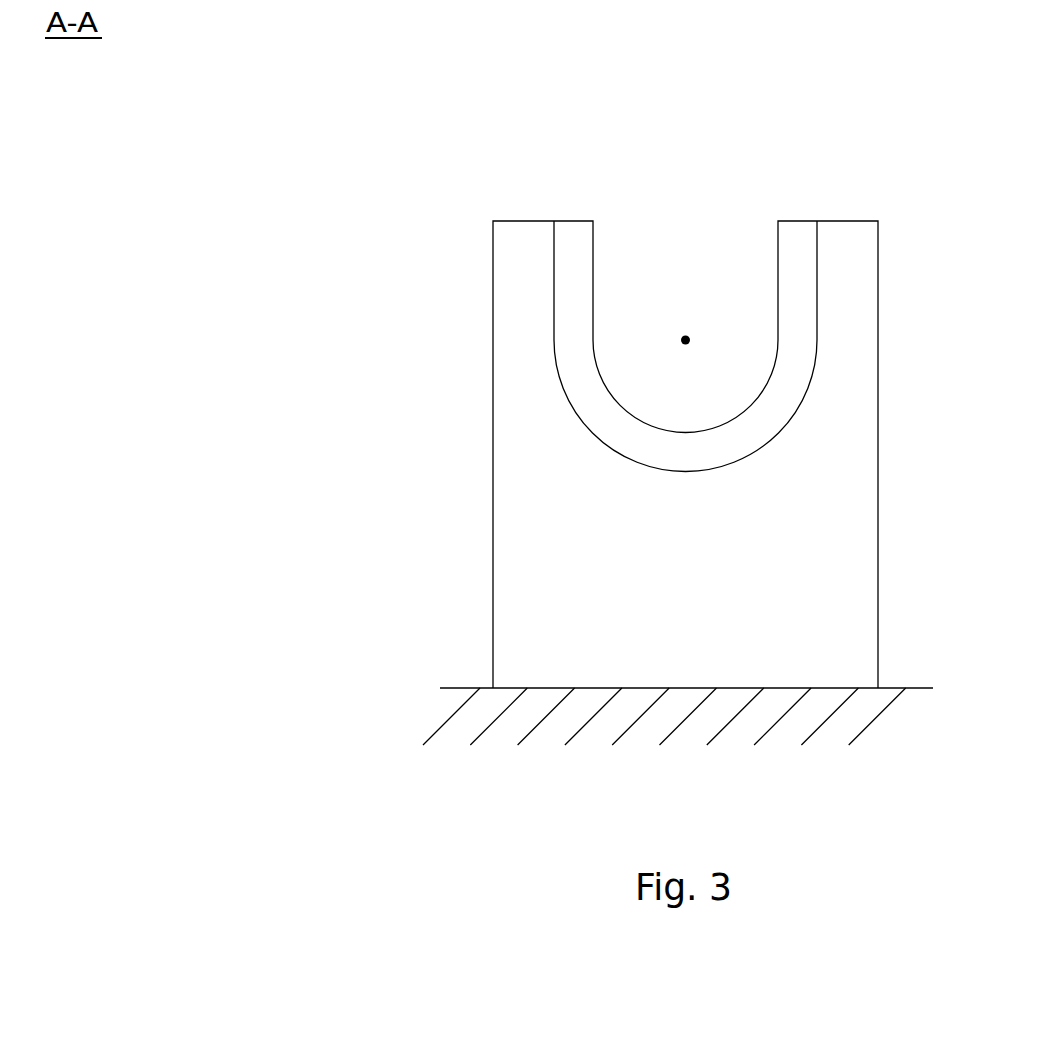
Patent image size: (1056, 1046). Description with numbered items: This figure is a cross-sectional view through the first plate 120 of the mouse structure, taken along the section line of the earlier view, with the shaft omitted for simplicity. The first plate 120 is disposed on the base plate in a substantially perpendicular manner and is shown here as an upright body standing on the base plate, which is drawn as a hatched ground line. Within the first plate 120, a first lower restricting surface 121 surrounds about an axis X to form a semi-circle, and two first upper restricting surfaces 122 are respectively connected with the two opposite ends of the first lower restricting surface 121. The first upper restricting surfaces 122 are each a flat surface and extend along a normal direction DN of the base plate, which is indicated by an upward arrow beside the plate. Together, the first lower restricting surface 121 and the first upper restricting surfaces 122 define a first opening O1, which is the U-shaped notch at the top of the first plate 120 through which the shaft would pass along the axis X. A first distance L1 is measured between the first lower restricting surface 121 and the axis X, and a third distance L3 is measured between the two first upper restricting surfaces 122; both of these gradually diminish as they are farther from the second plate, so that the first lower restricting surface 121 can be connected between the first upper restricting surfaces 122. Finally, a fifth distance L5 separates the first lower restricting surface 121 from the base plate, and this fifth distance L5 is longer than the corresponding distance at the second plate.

The first plate 120 is at (725, 454).
The first lower restricting surface 121 is at (625, 442).
The first upper restricting surfaces 122 is at (565, 302).
The axis X is at (686, 340).
The first opening O1 is at (692, 298).
The first distance L1 is at (803, 397).
The third distance L3 is at (817, 220).
The fifth distance L5 is at (686, 432).
The normal direction DN is at (917, 615).